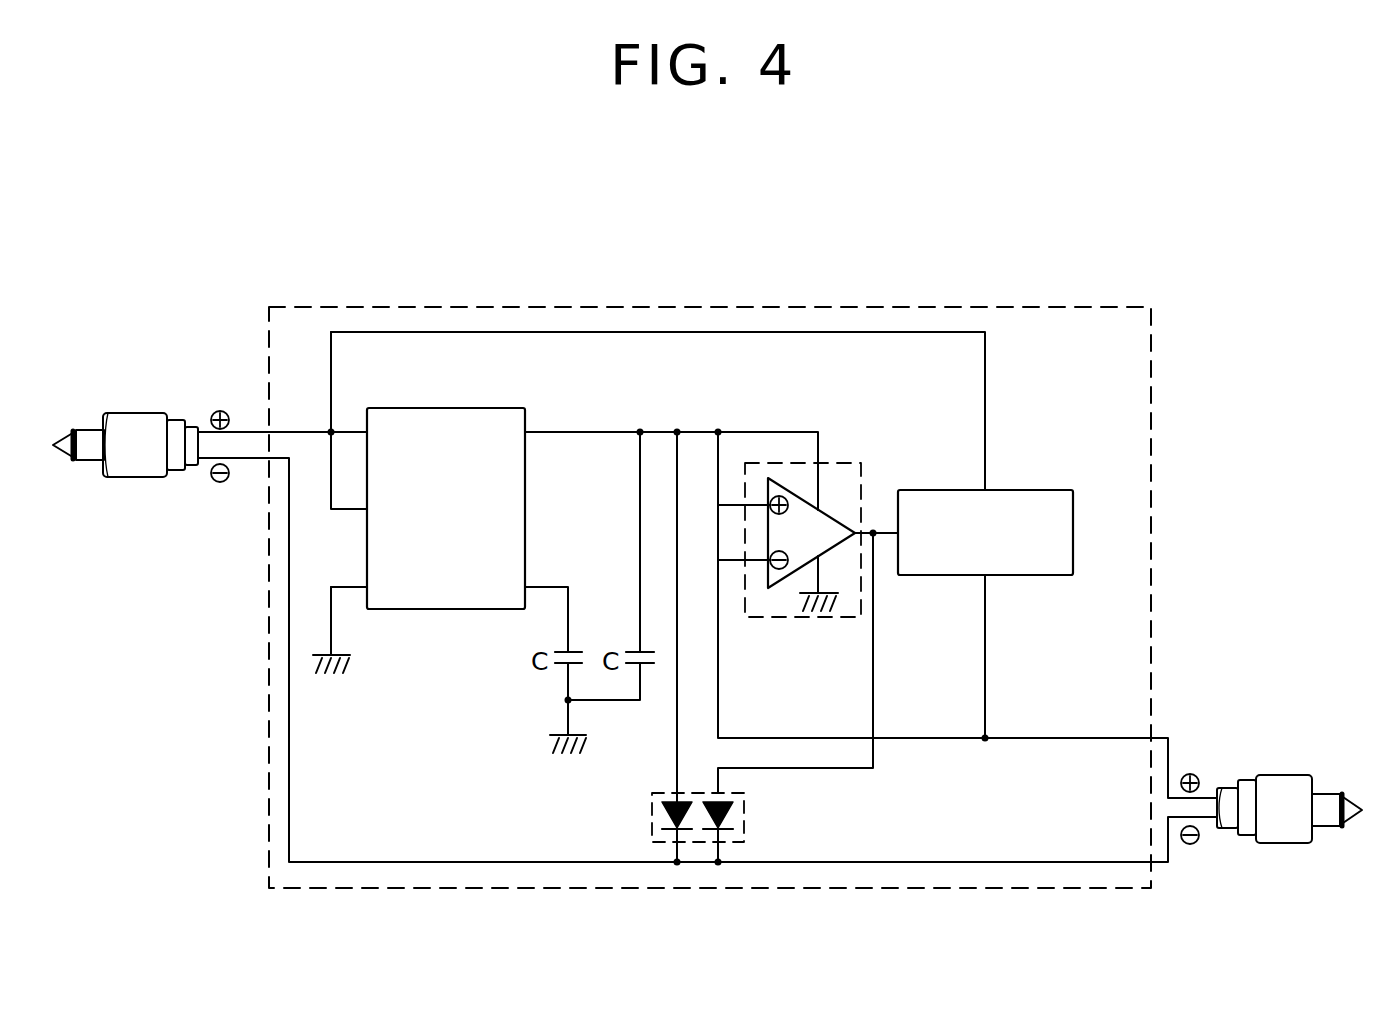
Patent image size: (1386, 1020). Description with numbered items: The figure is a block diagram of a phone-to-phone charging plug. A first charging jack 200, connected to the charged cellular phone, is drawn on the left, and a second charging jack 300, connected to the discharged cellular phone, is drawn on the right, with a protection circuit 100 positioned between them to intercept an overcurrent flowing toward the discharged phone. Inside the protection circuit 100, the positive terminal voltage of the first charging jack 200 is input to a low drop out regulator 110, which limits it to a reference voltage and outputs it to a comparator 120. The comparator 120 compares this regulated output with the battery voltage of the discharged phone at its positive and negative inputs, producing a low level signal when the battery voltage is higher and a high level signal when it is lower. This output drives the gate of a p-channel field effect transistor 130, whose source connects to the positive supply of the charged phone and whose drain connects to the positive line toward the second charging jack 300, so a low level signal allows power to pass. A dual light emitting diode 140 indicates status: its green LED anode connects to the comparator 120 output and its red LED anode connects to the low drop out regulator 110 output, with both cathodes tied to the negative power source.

The protection circuit 100 is at (518, 307).
The low drop out regulator 110 is at (425, 610).
The comparator 120 is at (835, 463).
The p-channel field effect transistor 130 is at (1027, 490).
The dual light emitting diode 140 is at (652, 800).
The first charging jack 200 is at (135, 413).
The second charging jack 300 is at (1277, 775).